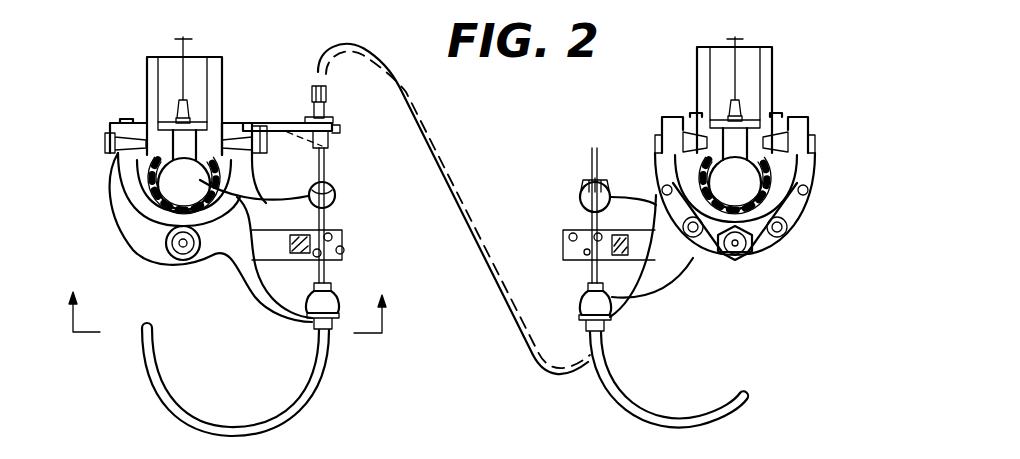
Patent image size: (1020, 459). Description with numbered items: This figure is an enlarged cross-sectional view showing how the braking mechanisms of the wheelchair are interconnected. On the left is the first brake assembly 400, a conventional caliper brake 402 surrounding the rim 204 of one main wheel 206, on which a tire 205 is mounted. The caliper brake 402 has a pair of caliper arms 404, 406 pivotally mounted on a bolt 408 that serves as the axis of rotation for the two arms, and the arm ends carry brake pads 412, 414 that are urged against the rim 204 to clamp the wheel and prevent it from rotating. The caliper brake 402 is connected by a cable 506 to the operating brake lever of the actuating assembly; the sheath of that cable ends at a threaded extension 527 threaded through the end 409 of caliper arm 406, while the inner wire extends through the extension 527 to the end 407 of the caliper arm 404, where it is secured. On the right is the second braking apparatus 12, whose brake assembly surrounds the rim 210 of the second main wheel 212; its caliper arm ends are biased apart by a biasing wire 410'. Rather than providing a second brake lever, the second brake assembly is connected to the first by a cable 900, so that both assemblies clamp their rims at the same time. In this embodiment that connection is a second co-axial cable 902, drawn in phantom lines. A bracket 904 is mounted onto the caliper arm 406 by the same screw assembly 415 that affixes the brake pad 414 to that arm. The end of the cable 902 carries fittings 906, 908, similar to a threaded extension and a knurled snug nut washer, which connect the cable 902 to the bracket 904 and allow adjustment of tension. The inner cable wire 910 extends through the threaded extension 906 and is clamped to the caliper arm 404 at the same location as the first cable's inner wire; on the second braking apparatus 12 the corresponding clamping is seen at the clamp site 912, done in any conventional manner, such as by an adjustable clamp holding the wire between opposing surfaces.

The second braking apparatus 12 is at (818, 194).
The rim 204 is at (174, 140).
The tire 205 is at (256, 143).
The main wheel 206 is at (146, 70).
The rim 210 is at (757, 124).
The second main wheel 212 is at (769, 64).
The brake assembly 400 is at (130, 244).
The caliper brake 402 is at (149, 257).
The caliper arm 404 is at (116, 183).
The caliper arm 406 is at (273, 310).
The end of caliper arm 407 is at (334, 198).
The pivot bolt 408 is at (188, 262).
The end of caliper arm 409 is at (342, 300).
The biasing wire 410' is at (788, 262).
The brake pad 412 is at (137, 145).
The brake pad 414 is at (228, 118).
The screw assembly 415 is at (320, 157).
The cable 506 is at (292, 421).
The threaded extension 527 is at (335, 332).
The cable 900 is at (464, 216).
The second co-axial cable 902 is at (449, 210).
The bracket 904 is at (331, 135).
The threaded extension 906 is at (335, 92).
The snug nut washer 908 is at (330, 109).
The inner cable wire 910 is at (287, 108).
The clamp site 912 is at (578, 184).